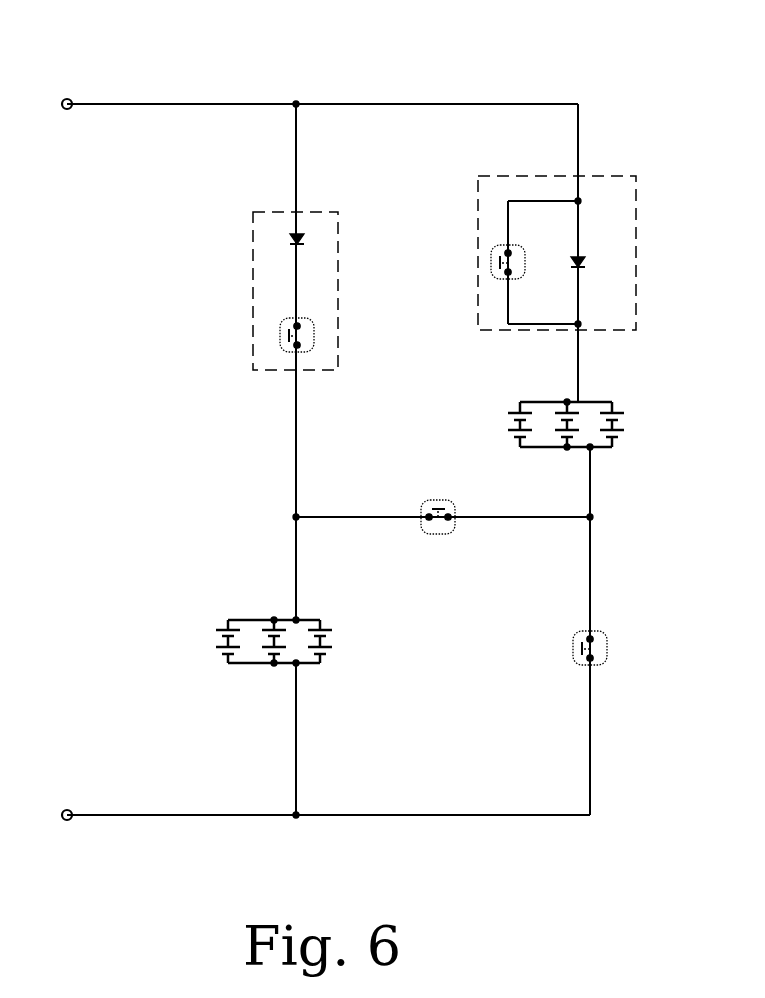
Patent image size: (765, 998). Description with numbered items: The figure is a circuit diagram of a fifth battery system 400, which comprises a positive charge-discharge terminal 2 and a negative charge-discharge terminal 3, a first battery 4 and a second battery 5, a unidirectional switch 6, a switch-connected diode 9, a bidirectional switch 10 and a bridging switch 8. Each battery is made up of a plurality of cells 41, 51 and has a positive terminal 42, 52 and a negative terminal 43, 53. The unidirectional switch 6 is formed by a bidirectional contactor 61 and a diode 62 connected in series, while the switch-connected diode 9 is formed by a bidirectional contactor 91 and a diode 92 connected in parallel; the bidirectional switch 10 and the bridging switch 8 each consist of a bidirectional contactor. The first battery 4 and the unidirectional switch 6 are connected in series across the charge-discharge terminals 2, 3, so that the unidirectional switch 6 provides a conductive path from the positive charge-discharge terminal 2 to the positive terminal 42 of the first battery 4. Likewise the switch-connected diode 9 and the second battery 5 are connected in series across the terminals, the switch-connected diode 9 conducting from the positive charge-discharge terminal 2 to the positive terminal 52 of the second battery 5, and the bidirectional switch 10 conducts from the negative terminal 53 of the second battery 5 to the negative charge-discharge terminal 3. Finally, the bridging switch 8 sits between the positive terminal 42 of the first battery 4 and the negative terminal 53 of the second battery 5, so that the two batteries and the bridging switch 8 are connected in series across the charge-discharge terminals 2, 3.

The positive charge-discharge terminal 2 is at (67, 98).
The negative charge-discharge terminal 3 is at (66, 808).
The battery system 400 is at (530, 84).
The first battery 4 is at (245, 635).
The cells 41 is at (222, 637).
The positive terminal 42 is at (293, 616).
The negative terminal 43 is at (296, 666).
The second battery 5 is at (589, 417).
The cells 51 is at (616, 428).
The positive terminal 52 is at (575, 402).
The negative terminal 53 is at (593, 450).
The unidirectional switch 6 is at (291, 291).
The bidirectional contactor 61 is at (280, 334).
The diode 62 is at (292, 239).
The bridging switch 8 is at (436, 500).
The switch-connected diode 9 is at (565, 253).
The bidirectional contactor 91 is at (495, 248).
The diode 92 is at (582, 262).
The bidirectional switch 10 is at (607, 650).